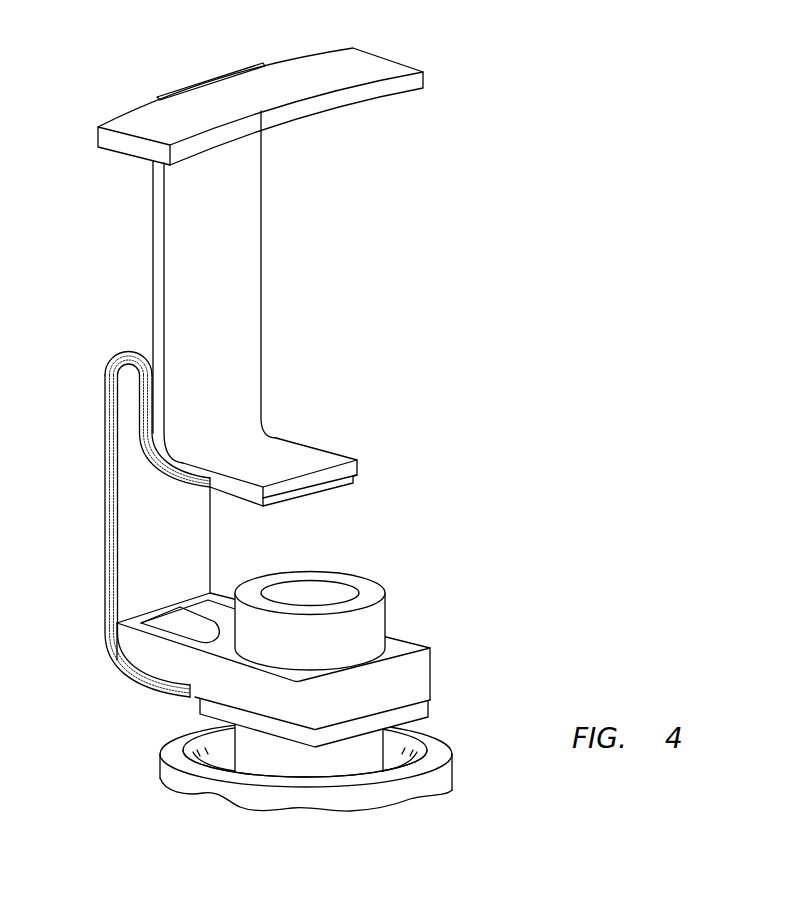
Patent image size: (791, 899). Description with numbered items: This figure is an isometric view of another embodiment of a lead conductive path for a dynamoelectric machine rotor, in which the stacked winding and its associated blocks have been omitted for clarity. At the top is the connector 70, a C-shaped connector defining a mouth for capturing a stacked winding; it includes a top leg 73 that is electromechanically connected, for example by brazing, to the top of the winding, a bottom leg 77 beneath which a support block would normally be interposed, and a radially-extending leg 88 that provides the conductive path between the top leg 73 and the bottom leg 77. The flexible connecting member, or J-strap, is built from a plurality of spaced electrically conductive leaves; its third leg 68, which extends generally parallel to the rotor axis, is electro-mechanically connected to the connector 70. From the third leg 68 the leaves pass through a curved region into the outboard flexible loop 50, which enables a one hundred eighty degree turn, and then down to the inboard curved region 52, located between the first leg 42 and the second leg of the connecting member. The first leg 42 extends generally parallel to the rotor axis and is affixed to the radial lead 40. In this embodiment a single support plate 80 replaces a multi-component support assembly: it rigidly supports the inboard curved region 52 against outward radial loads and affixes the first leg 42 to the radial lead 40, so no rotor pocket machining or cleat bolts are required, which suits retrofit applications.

The top leg 73 is at (347, 68).
The connector 70 is at (303, 198).
The radially-extending leg 88 is at (153, 226).
The outboard flexible loop 50 is at (153, 344).
The bottom leg 77 is at (280, 463).
The third leg 68 is at (233, 504).
The radial lead 40 is at (313, 590).
The support plate 80 is at (430, 673).
The inboard curved region 52 is at (113, 670).
The first leg 42 is at (197, 703).